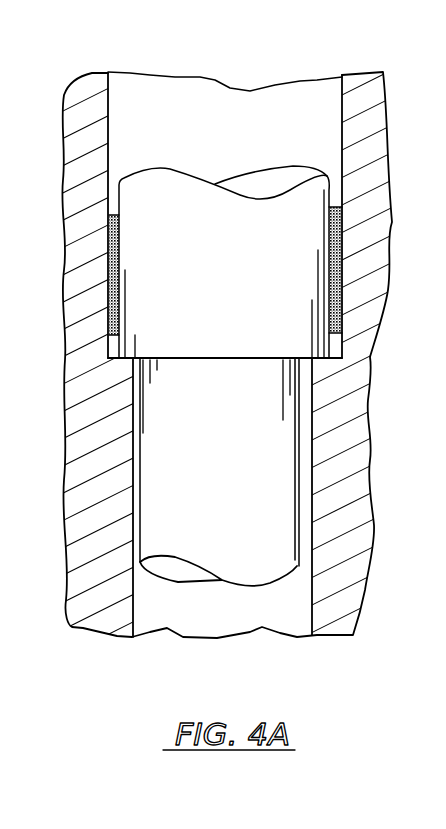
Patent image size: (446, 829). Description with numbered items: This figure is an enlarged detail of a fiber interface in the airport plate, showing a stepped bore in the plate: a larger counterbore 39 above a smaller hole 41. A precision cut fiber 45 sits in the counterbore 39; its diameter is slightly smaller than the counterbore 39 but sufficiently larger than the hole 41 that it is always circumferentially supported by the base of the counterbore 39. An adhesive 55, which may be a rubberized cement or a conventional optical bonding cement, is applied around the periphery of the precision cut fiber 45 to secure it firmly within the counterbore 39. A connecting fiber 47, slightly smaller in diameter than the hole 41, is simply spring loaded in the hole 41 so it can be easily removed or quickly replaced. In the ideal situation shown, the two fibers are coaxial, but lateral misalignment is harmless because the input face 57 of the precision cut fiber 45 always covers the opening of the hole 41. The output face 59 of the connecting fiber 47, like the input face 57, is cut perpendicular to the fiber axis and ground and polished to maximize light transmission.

The counterbore 39 is at (283, 113).
The hole 41 is at (307, 443).
The precision cut fiber 45 is at (170, 192).
The connecting fiber 47 is at (275, 523).
The adhesive 55 is at (340, 253).
The input face 57 is at (200, 357).
The output face 59 is at (252, 362).